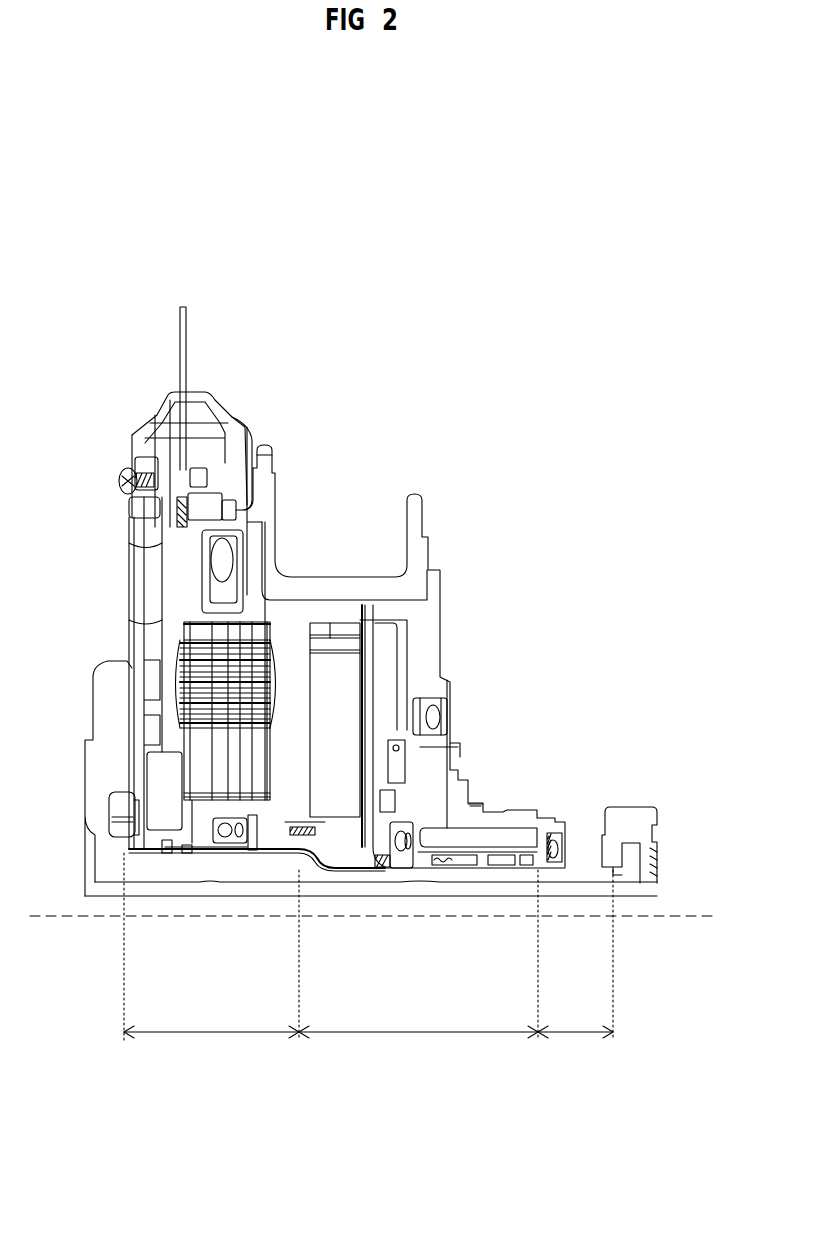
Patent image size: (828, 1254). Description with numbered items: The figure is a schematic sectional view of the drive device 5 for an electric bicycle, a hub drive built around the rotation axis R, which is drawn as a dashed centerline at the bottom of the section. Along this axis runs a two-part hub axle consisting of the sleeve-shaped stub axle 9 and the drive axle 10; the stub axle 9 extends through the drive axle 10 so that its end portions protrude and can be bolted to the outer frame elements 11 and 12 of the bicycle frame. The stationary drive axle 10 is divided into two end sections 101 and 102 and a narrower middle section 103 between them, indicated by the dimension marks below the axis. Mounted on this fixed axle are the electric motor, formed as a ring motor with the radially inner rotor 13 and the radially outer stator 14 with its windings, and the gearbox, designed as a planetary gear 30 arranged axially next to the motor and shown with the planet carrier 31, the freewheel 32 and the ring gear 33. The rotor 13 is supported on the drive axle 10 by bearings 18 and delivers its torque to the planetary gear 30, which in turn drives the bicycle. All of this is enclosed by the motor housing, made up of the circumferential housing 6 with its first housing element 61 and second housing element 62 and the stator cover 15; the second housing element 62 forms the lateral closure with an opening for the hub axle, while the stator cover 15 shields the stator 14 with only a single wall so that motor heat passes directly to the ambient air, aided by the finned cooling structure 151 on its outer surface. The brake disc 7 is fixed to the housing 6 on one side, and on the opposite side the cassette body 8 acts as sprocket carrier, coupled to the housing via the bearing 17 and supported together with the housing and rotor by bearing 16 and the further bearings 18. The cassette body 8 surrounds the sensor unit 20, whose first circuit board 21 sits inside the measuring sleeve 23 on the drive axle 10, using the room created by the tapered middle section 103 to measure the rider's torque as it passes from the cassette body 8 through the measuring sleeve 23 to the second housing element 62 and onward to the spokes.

The drive device 5 is at (74, 279).
The circumferential housing 6 is at (468, 450).
The brake disc 7 is at (180, 368).
The cassette body 8 is at (537, 822).
The stub axle 9 is at (331, 885).
The drive axle 10 is at (253, 868).
The frame element 11 is at (107, 848).
The frame element 12 is at (638, 815).
The rotor 13 is at (222, 762).
The stator 14 is at (215, 677).
The stator cover 15 is at (165, 650).
The bearing 16 is at (222, 562).
The bearing 17 is at (433, 718).
The bearing 18 is at (227, 835).
The sensor unit 20 is at (494, 914).
The first circuit board 21 is at (507, 870).
The measuring sleeve 23 is at (486, 838).
The planetary gear 30 is at (338, 693).
The planet carrier 31 is at (365, 637).
The freewheel 32 is at (340, 630).
The ring gear 33 is at (320, 642).
The first housing element 61 is at (272, 488).
The second housing element 62 is at (428, 657).
The end section 101 is at (200, 1033).
The end section 102 is at (580, 1033).
The middle section 103 is at (400, 1033).
The cooling structure 151 is at (126, 673).
The rotation axis R is at (688, 918).